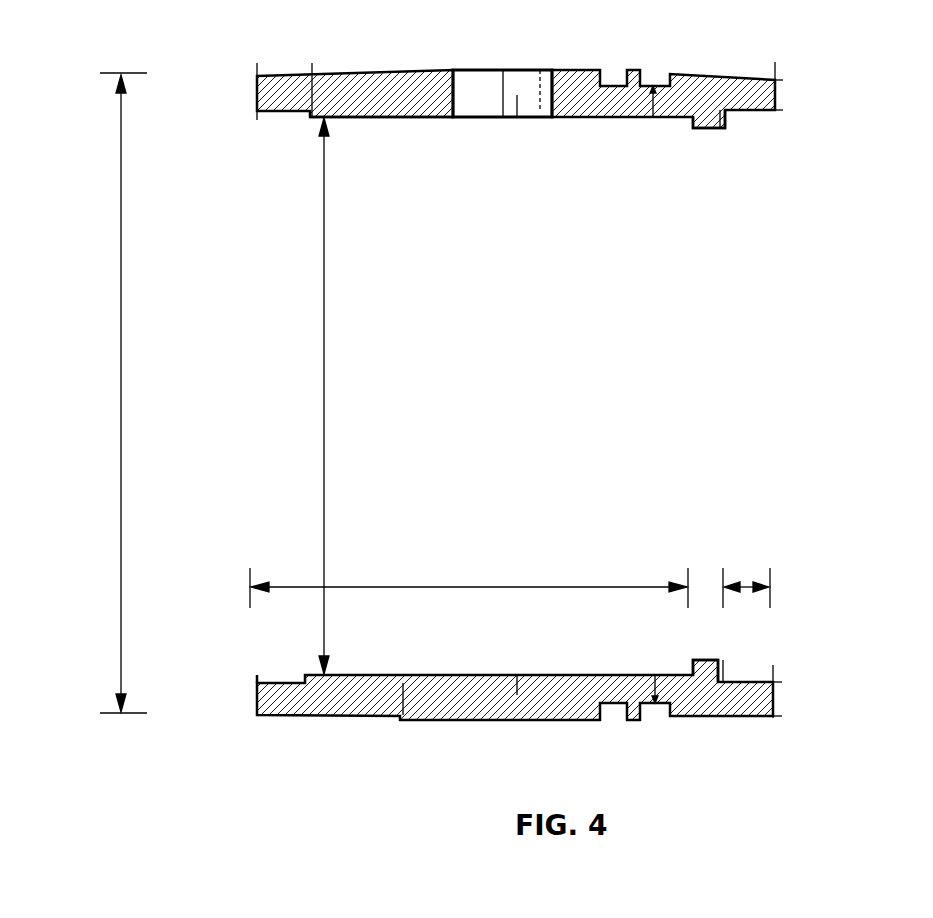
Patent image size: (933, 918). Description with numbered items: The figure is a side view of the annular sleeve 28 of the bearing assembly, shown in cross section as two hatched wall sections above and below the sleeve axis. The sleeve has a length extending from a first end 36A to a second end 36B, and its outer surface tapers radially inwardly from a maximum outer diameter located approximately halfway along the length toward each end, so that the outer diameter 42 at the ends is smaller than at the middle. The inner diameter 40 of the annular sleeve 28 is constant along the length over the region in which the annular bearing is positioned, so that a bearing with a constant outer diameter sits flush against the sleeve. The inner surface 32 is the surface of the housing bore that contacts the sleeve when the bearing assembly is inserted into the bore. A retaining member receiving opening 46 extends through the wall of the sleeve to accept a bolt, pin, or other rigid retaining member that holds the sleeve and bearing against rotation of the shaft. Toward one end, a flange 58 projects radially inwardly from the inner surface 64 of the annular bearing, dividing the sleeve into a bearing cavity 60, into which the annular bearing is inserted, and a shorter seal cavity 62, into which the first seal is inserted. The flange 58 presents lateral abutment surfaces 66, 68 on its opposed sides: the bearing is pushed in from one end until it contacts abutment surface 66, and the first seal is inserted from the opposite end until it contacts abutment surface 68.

The annular sleeve 28 is at (538, 369).
The inner surface 32 is at (500, 110).
The retaining member receiving opening 46 is at (485, 85).
The inner surface 64 is at (400, 118).
The abutment surface 66 is at (693, 126).
The abutment surface 68 is at (727, 127).
The first end 36A is at (777, 98).
The second end 36B is at (255, 93).
The flange 58 is at (700, 660).
The outer diameter 42 is at (120, 393).
The inner diameter 40 is at (311, 396).
The bearing cavity 60 is at (469, 585).
The seal cavity 62 is at (746, 581).